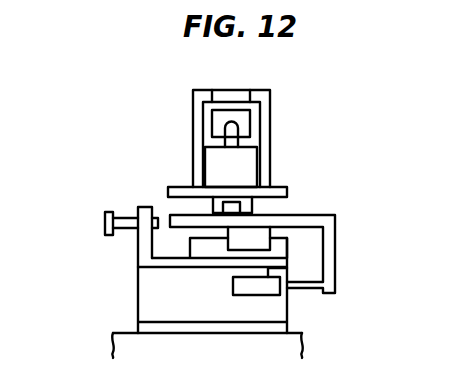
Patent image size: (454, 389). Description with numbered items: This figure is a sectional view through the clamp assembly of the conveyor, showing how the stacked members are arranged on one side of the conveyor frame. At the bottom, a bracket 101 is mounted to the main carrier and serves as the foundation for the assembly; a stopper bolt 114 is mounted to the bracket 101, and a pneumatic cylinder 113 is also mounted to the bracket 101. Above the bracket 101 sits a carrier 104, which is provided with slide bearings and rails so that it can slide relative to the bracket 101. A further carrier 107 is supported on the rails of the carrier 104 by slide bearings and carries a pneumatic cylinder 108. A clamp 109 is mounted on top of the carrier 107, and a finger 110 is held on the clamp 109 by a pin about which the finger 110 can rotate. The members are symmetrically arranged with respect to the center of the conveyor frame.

The bracket 101 is at (138, 279).
The carrier 104 is at (335, 231).
The carrier 107 is at (287, 191).
The pneumatic cylinder 108 is at (245, 170).
The clamp 109 is at (235, 90).
The finger 110 is at (248, 111).
The pneumatic cylinder 113 is at (258, 295).
The stopper bolt 114 is at (125, 217).